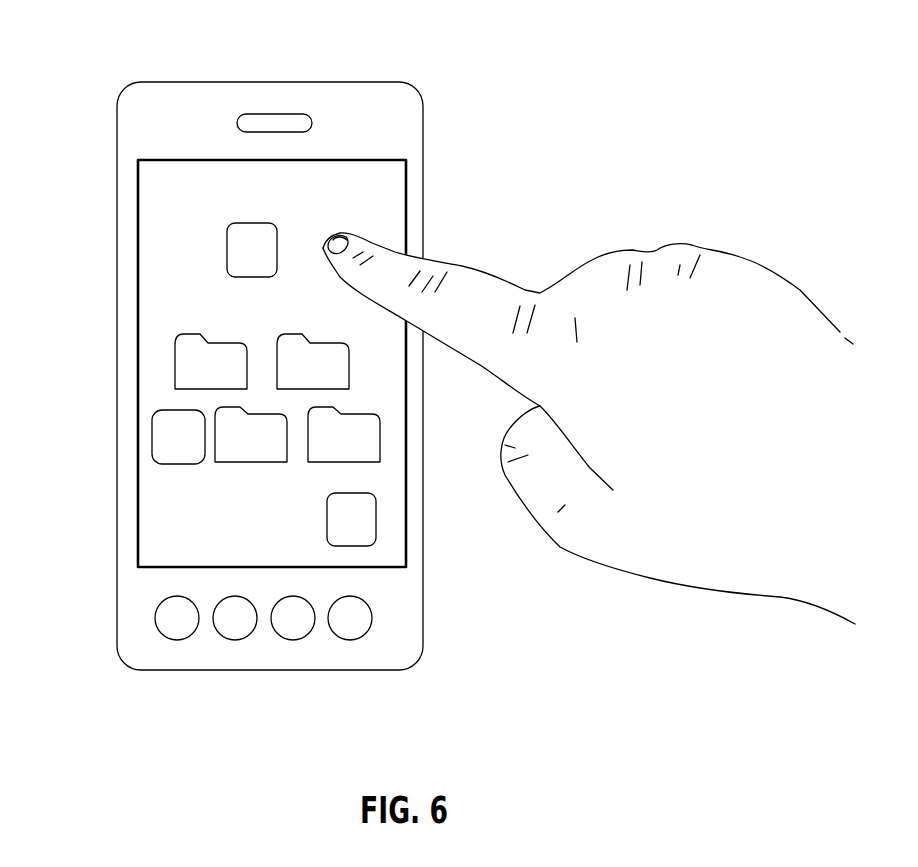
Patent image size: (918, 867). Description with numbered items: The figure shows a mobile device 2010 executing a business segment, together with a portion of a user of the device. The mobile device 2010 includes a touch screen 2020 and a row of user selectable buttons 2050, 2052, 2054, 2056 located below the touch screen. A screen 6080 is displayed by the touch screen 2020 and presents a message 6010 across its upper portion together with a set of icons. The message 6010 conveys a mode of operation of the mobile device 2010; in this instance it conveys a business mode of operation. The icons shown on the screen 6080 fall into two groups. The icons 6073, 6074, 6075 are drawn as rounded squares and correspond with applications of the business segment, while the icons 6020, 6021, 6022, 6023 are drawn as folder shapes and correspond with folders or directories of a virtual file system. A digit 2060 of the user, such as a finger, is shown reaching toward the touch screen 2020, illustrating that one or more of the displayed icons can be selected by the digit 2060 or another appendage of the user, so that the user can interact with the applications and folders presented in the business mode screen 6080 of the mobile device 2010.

The mobile device 2010 is at (268, 82).
The touch screen 2020 is at (338, 160).
The message 6010 is at (367, 184).
The screen 6080 is at (212, 365).
The digit 2060 is at (470, 283).
The user selectable button 2050 is at (190, 639).
The user selectable button 2052 is at (247, 639).
The user selectable button 2054 is at (306, 639).
The user selectable button 2056 is at (364, 639).
The icon 6073 is at (233, 262).
The icon 6023 is at (185, 380).
The icon 6022 is at (287, 380).
The icon 6075 is at (198, 450).
The icon 6020 is at (223, 449).
The icon 6021 is at (316, 449).
The icon 6074 is at (371, 533).